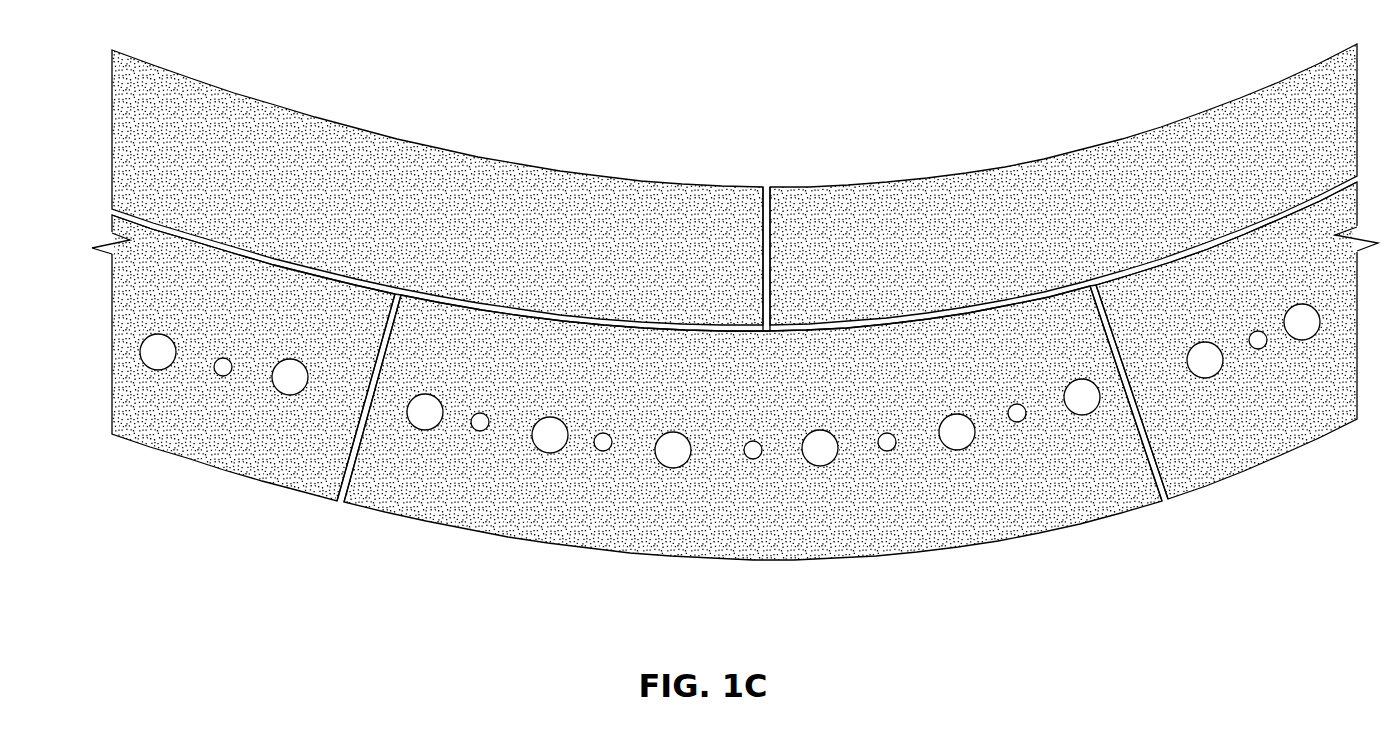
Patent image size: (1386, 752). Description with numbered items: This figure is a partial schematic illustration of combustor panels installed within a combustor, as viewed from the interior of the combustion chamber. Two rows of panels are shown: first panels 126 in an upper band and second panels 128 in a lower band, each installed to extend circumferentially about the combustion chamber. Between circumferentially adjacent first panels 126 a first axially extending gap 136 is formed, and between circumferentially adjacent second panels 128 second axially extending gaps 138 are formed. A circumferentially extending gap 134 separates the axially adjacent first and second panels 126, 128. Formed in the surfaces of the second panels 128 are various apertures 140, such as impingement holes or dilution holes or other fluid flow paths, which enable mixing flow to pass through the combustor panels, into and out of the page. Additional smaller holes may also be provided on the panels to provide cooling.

The first panels 126 is at (443, 172).
The second panels 128 is at (171, 455).
The circumferentially extending gap 134 is at (313, 266).
The first axially extending gaps 136 is at (768, 185).
The second axially extending gaps 138 is at (340, 503).
The apertures 140 is at (633, 200).